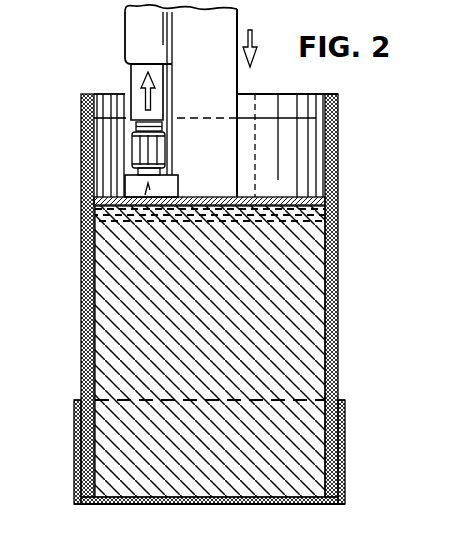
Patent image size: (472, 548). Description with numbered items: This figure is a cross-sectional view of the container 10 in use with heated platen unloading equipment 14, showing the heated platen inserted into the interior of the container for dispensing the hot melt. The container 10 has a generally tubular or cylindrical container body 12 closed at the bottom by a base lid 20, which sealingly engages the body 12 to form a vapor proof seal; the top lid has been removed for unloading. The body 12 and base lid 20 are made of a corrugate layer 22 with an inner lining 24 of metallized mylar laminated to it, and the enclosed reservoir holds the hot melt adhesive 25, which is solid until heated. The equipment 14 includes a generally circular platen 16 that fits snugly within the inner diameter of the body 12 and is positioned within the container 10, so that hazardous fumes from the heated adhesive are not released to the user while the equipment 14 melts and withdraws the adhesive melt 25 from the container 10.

The container 10 is at (50, 120).
The container body 12 is at (83, 331).
The heated platen unloading equipment 14 is at (239, 18).
The platen 16 is at (338, 180).
The base lid 20 is at (344, 467).
The corrugate layer 22 is at (338, 263).
The inner lining 24 is at (314, 96).
The hot melt adhesive 25 is at (218, 346).